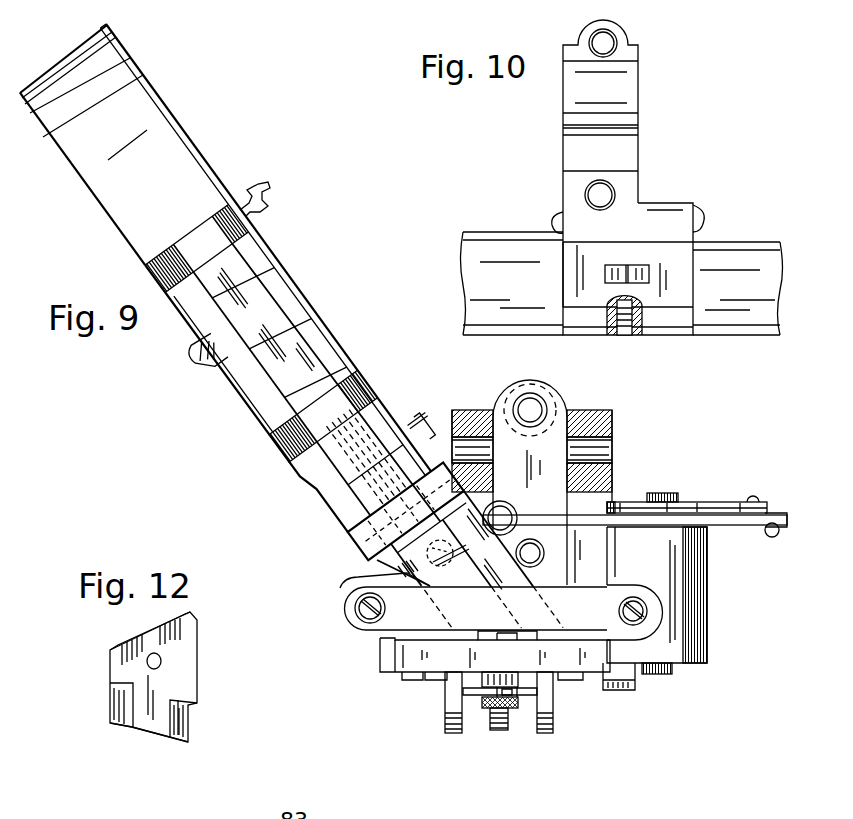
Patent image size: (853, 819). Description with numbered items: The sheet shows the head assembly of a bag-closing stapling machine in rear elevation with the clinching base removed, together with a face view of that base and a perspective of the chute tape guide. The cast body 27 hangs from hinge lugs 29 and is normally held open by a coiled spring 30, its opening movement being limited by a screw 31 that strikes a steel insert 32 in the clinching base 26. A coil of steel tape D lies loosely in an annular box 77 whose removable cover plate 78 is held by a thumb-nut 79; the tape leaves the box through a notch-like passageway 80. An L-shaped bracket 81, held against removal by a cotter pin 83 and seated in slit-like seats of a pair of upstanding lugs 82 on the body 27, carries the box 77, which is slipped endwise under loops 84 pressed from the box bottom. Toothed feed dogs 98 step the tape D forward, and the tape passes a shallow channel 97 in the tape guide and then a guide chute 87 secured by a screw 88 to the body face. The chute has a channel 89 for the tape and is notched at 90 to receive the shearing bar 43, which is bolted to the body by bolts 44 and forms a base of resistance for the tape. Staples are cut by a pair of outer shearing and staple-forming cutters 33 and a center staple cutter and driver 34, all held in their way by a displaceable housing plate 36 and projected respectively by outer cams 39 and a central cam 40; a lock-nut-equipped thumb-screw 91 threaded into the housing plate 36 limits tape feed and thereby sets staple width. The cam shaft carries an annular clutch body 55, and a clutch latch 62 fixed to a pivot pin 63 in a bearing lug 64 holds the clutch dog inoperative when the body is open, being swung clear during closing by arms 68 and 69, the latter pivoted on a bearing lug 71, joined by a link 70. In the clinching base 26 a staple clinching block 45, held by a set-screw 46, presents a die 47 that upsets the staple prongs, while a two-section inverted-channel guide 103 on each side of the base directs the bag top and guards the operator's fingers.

In FIG. 9, the annular box 77 is at (143, 108).
In FIG. 9, the removable cover plate 78 is at (200, 147).
In FIG. 9, the thumb-nut 79 is at (270, 200).
In FIG. 9, the notch-like passageway 80 is at (246, 236).
In FIG. 9, the steel tape D is at (270, 302).
In FIG. 9, the L-shaped bracket 81 is at (233, 380).
In FIG. 9, the loops 84 is at (210, 358).
In FIG. 9, the cotter pin 83 is at (418, 414).
In FIG. 9, the feed dogs 98 is at (345, 500).
In FIG. 9, the upstanding lugs 82 is at (350, 512).
In FIG. 9, the shallow channel 97 is at (374, 558).
In FIG. 9, the guide chute 87 is at (358, 580).
In FIG. 12, the guide chute 87 is at (196, 665).
In FIG. 9, the screw 88 is at (427, 581).
In FIG. 9, the shearing bar 43 is at (578, 598).
In FIG. 9, the bolts 44 is at (362, 607).
In FIG. 9, the hinge lugs 29 is at (472, 418).
In FIG. 10, the hinge lugs 29 is at (630, 93).
In FIG. 9, the screw 31 is at (540, 405).
In FIG. 9, the body 27 is at (616, 490).
In FIG. 9, the bearing lug 71 is at (500, 512).
In FIG. 9, the arm 69 is at (560, 518).
In FIG. 9, the arm 68 is at (728, 505).
In FIG. 9, the link 70 is at (770, 515).
In FIG. 9, the pivot pin 63 is at (662, 497).
In FIG. 9, the clutch latch 62 is at (690, 640).
In FIG. 9, the bearing lug 64 is at (685, 556).
In FIG. 9, the coiled spring 30 is at (540, 558).
In FIG. 10, the coiled spring 30 is at (586, 194).
In FIG. 9, the annular body 55 is at (622, 690).
In FIG. 9, the outer shearing and staple-forming cutters 33 is at (445, 630).
In FIG. 9, the housing plate 36 is at (442, 658).
In FIG. 9, the outer cams 39 is at (457, 735).
In FIG. 9, the central cam 40 is at (503, 728).
In FIG. 9, the thumb-screw 91 is at (492, 708).
In FIG. 9, the center staple cutter and driver 34 is at (517, 640).
In FIG. 10, the steel insert 32 is at (604, 43).
In FIG. 10, the clinching base 26 is at (651, 204).
In FIG. 10, the guide 103 is at (483, 246).
In FIG. 10, the staple clinching block 45 is at (582, 259).
In FIG. 10, the die 47 is at (622, 265).
In FIG. 10, the set-screw 46 is at (629, 336).
In FIG. 12, the notches 90 is at (118, 716).
In FIG. 12, the channel 89 is at (162, 735).